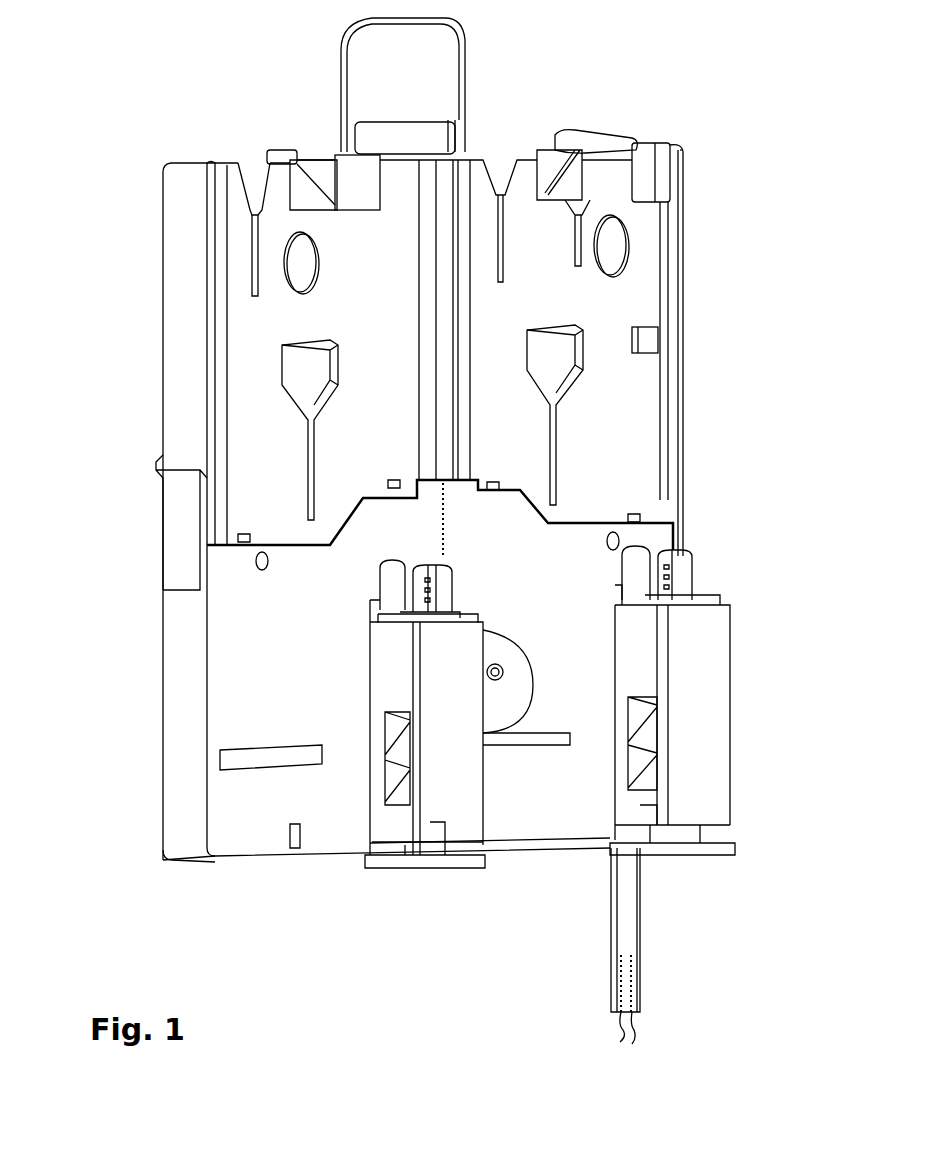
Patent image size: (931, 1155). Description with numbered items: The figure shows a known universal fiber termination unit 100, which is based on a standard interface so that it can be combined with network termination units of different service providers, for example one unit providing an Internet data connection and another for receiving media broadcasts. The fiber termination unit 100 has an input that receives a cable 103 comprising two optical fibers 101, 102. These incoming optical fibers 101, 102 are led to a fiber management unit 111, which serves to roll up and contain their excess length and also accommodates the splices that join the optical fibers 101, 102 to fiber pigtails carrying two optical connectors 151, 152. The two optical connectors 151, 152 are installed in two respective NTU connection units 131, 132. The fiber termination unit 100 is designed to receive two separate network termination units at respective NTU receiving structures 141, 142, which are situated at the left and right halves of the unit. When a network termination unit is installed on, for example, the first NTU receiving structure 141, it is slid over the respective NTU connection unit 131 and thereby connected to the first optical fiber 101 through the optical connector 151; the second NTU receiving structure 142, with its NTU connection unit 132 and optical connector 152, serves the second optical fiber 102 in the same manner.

The universal fiber termination unit 100 is at (206, 166).
The first NTU receiving structure 141 is at (242, 425).
The second NTU receiving structure 142 is at (628, 393).
The fiber management unit 111 is at (230, 725).
The first NTU connection unit 131 is at (388, 680).
The second NTU connection unit 132 is at (712, 637).
The first optical connector 151 is at (443, 585).
The second optical connector 152 is at (688, 563).
The cable 103 is at (622, 933).
The first optical fiber 101 is at (620, 1030).
The second optical fiber 102 is at (636, 1035).